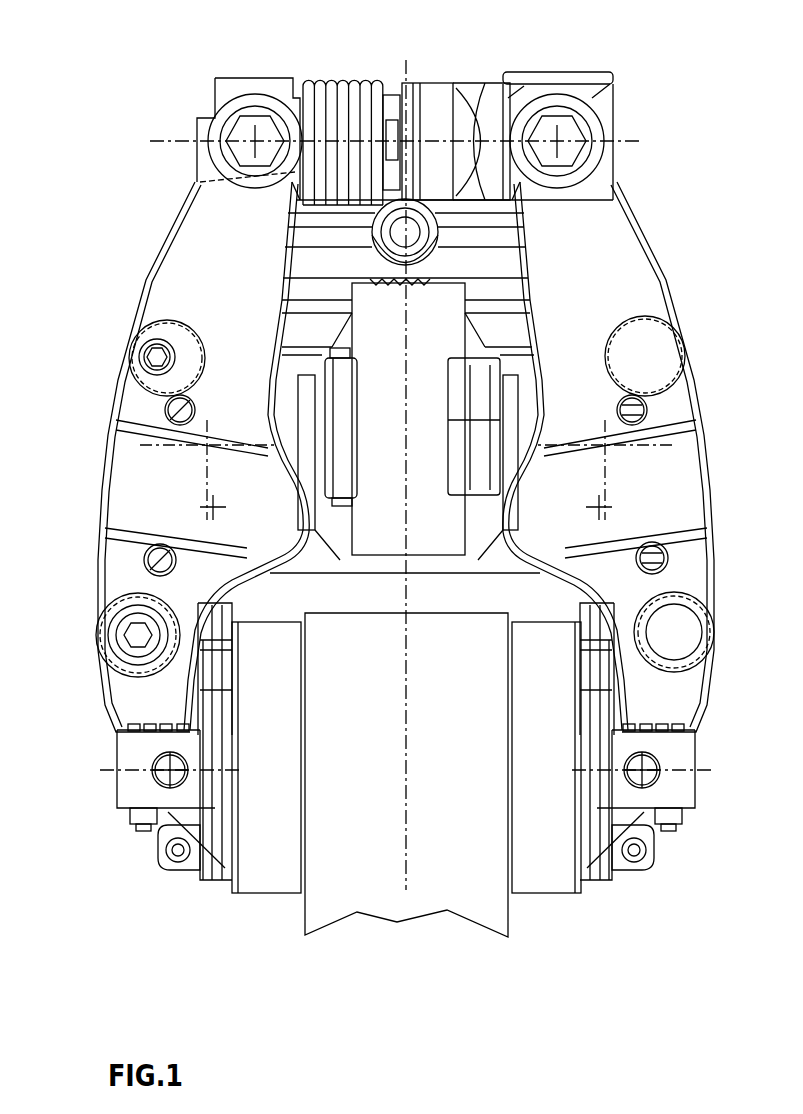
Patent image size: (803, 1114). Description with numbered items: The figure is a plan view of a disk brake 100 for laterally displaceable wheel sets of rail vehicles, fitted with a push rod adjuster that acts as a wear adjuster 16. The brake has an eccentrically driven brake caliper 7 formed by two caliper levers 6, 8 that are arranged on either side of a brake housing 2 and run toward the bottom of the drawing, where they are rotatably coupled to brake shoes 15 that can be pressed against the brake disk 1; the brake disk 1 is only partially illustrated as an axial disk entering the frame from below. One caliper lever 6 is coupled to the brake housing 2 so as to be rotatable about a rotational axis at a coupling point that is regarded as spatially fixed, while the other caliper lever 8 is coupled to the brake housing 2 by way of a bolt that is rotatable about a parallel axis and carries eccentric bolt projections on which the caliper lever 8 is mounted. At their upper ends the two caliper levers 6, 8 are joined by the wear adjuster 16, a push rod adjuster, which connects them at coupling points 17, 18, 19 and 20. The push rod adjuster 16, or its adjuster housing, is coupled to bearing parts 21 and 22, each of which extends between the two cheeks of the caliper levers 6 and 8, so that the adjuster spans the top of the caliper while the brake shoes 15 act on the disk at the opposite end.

The disk brake 100 is at (93, 92).
The brake disk 1 is at (378, 895).
The brake housing 2 is at (540, 548).
The caliper lever 6 is at (627, 255).
The brake caliper 7 is at (418, 457).
The caliper lever 8 is at (172, 290).
The brake shoes 15 is at (258, 882).
The wear adjuster 16 is at (428, 72).
The coupling point 17 is at (650, 772).
The coupling point 18 is at (168, 768).
The coupling point 19 is at (560, 140).
The coupling point 20 is at (255, 141).
The bearing part 21 is at (612, 108).
The bearing part 22 is at (215, 90).